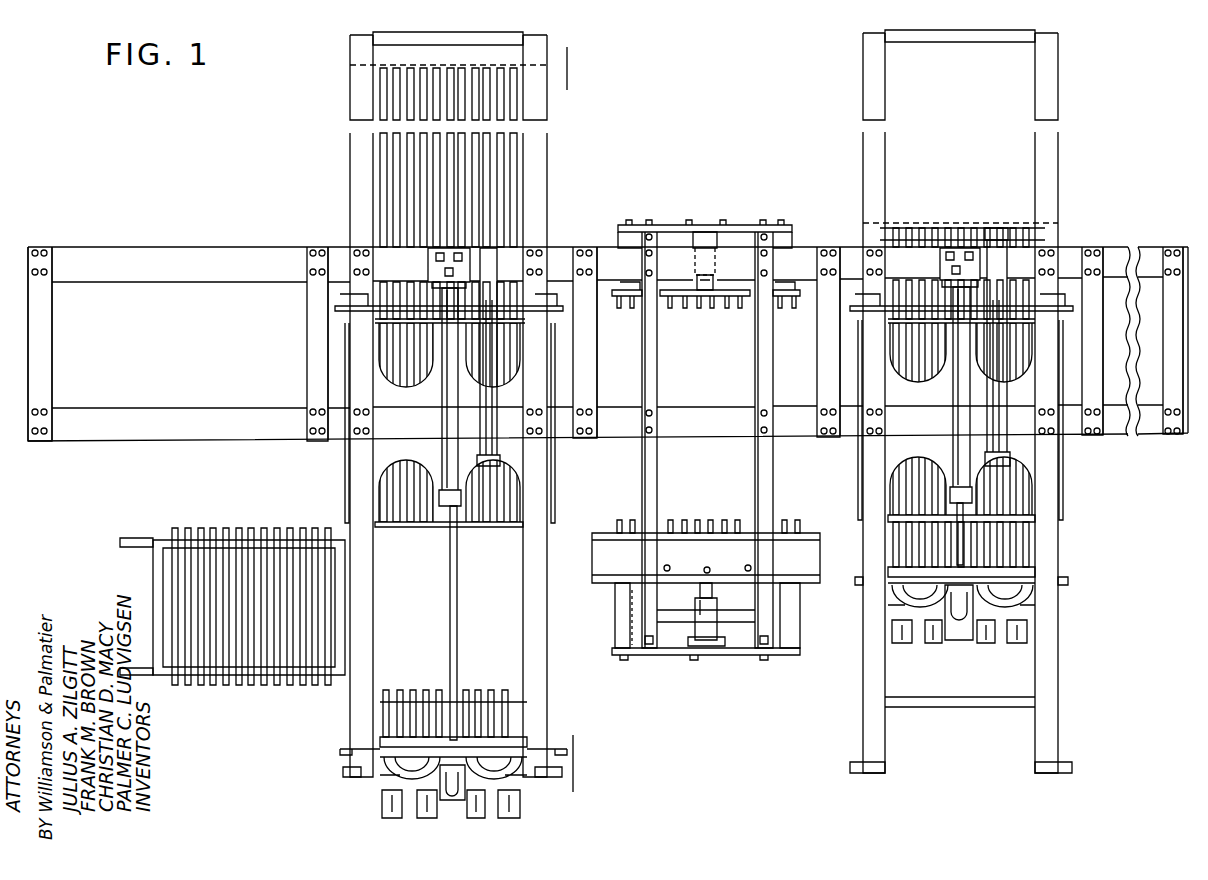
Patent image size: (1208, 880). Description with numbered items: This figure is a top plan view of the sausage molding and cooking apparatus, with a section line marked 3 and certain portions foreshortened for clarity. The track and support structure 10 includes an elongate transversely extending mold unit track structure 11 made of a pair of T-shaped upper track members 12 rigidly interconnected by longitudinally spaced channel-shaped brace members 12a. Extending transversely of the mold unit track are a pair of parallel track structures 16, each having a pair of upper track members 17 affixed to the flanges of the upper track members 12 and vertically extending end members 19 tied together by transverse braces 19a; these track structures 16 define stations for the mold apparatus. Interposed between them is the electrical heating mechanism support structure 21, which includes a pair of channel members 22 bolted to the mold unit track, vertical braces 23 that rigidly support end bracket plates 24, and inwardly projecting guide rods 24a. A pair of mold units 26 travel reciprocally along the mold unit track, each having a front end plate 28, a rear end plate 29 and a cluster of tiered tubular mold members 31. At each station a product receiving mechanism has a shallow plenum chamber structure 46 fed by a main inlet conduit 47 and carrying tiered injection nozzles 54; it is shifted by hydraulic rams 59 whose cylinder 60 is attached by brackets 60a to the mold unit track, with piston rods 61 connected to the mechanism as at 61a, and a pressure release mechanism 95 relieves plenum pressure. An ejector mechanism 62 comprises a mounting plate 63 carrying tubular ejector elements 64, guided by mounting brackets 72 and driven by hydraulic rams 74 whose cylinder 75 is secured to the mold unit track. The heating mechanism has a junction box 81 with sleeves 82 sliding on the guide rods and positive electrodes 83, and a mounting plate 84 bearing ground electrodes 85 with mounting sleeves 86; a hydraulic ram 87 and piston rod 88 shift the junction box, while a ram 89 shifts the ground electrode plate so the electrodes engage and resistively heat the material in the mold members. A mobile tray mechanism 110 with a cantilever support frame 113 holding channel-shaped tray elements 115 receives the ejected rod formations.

The section line 3- 3 is at (571, 55).
The track and support structure 10 is at (654, 146).
The mold unit track and supporting structure 11 is at (196, 241).
The upper track members 12 is at (168, 420).
The brace members 12a is at (1168, 350).
The track structures 16 is at (335, 168).
The upper track members 17 is at (1037, 140).
The end members 19 is at (1035, 766).
The transverse braces 19a is at (945, 705).
The electrical heating mechanism support structure 21 is at (714, 204).
The channel members 22 is at (763, 384).
The vertical braces 23 is at (768, 657).
The end bracket plates 24 is at (672, 657).
The guide rods 24a is at (625, 630).
The mold units 26 is at (338, 471).
The front end plate 28 is at (890, 522).
The rear end plate 29 is at (893, 325).
The tubular mold members 31 is at (903, 470).
The plenum chamber structure 46 is at (530, 752).
The main inlet conduit 47 is at (957, 645).
The injection nozzles 54 is at (1020, 550).
The hydraulic rams 59 is at (948, 398).
The cylinder 60 is at (958, 418).
The brackets 60a is at (940, 263).
The piston rods 61 is at (452, 603).
The piston rod connection 61a is at (383, 748).
The ejector mechanism 62 is at (987, 199).
The mounting plate 63 is at (917, 228).
The tubular ejector elements 64 is at (1022, 288).
The mounting brackets 72 is at (1068, 298).
The hydraulic rams 74 is at (499, 398).
The cylinder 75 is at (1000, 445).
The junction box 81 is at (722, 566).
The sleeves 82 is at (800, 615).
The positive electrodes 83 is at (740, 520).
The mounting plate 84 is at (618, 300).
The ground electrodes 85 is at (725, 300).
The mounting sleeves 86 is at (792, 238).
The hydraulic ram 87 is at (715, 625).
The piston rod 88 is at (715, 593).
The ram 89 is at (717, 252).
The pressure release mechanism 95 is at (985, 645).
The mobile tray mechanism 110 is at (240, 544).
The cantilever support frame 113 is at (165, 540).
The tray elements 115 is at (305, 688).